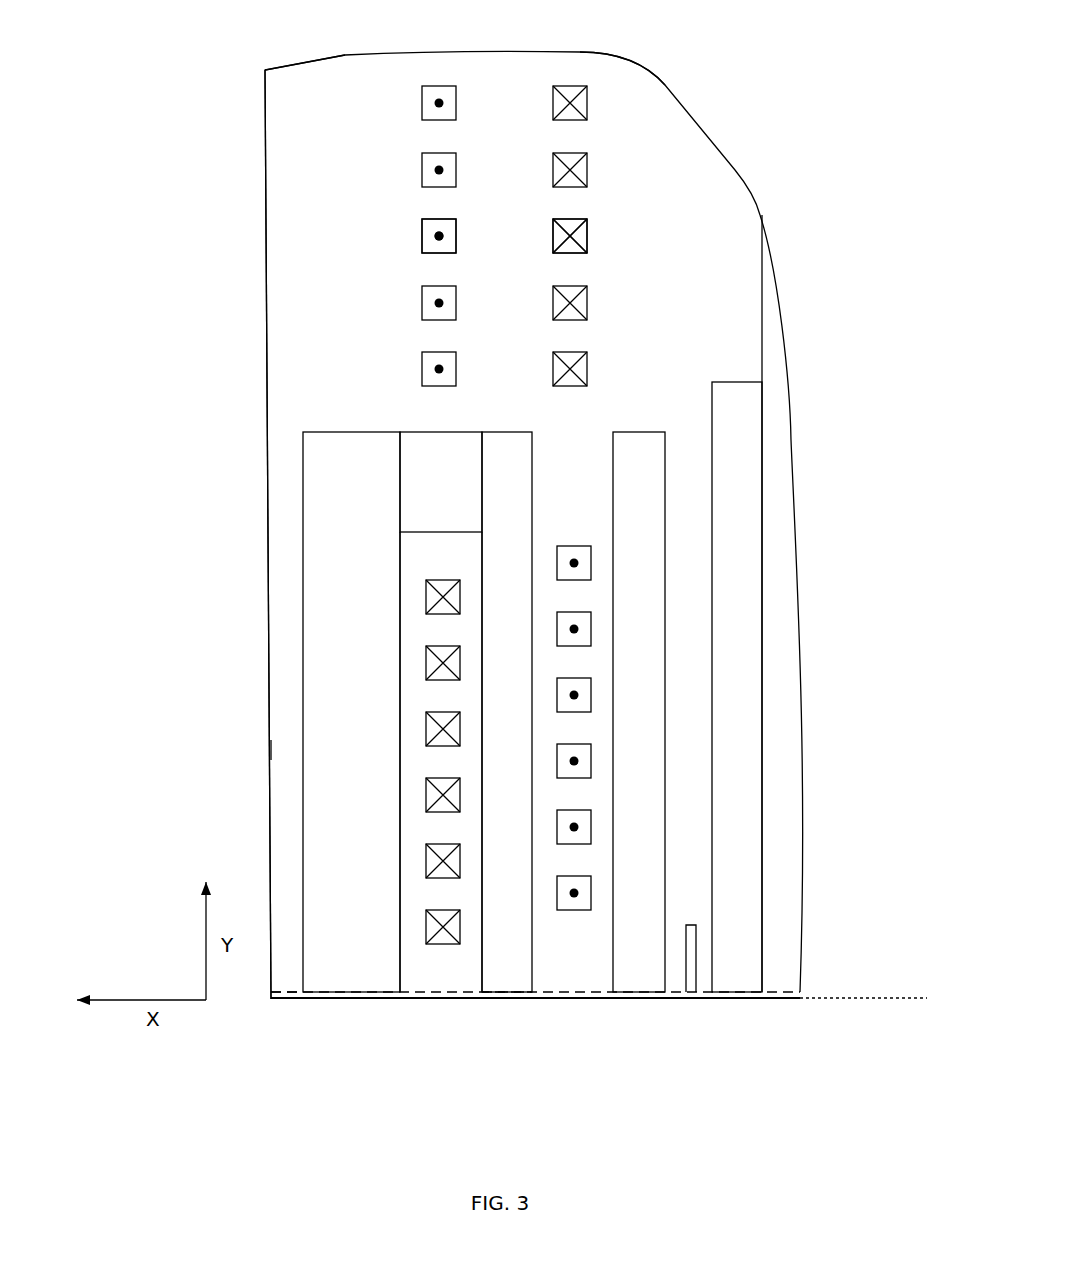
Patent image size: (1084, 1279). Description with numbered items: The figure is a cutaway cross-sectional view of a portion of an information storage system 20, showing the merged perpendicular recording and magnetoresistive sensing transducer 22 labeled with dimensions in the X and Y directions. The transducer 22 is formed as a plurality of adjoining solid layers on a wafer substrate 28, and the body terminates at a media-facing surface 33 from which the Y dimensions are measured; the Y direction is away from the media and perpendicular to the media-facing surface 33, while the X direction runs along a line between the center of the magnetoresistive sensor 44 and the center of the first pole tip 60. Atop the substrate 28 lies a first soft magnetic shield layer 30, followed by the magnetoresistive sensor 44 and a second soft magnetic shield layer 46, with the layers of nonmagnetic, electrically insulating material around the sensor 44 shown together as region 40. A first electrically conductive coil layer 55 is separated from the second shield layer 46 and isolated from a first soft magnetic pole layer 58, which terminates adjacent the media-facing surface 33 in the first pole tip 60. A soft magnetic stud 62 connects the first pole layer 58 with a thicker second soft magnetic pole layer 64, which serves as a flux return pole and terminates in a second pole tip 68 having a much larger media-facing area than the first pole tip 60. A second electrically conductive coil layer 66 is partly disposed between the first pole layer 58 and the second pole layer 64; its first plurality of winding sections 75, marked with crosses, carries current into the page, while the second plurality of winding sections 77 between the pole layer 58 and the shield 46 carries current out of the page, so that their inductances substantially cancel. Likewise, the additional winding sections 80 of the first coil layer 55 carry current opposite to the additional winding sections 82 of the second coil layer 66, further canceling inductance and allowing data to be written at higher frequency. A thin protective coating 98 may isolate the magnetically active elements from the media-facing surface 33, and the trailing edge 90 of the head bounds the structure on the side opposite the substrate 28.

The information storage system 20 is at (146, 55).
The transducer 22 is at (245, 746).
The wafer substrate 28 is at (794, 675).
The first soft magnetic shield layer 30 is at (725, 722).
The media-facing surface 33 is at (767, 1003).
The region of nonmagnetic, electrically insulating material 40 is at (691, 311).
The magnetoresistive sensor 44 is at (696, 925).
The second soft magnetic shield layer 46 is at (626, 558).
The first electrically conductive coil layer 55 is at (570, 82).
The first soft magnetic pole layer 58 is at (494, 475).
The first pole tip 60 is at (512, 990).
The soft magnetic stud 62 is at (429, 495).
The second soft magnetic pole layer 64 is at (315, 708).
The second electrically conductive coil layer 66 is at (439, 82).
The second pole tip 68 is at (355, 1001).
The first plurality of winding sections 75 is at (426, 592).
The second plurality of winding sections 77 is at (591, 628).
The additional winding sections 80 is at (587, 237).
The additional winding sections 82 is at (422, 237).
The trailing edge 90 is at (271, 665).
The protective coating 98 is at (290, 990).